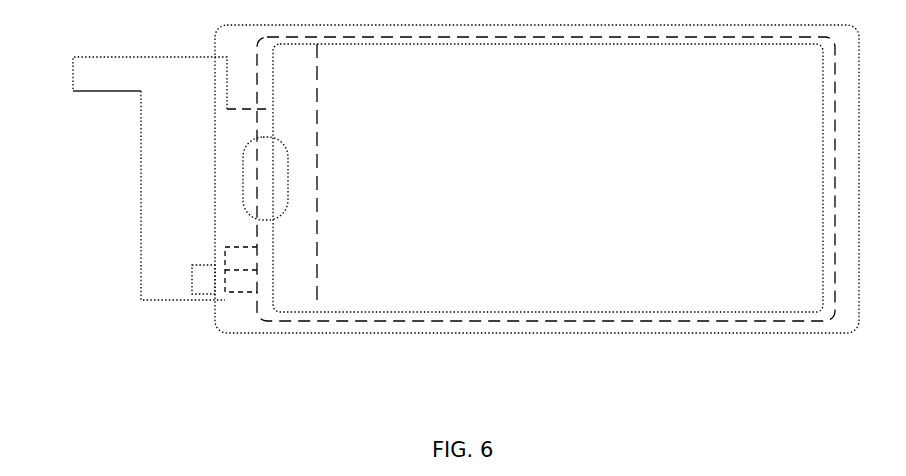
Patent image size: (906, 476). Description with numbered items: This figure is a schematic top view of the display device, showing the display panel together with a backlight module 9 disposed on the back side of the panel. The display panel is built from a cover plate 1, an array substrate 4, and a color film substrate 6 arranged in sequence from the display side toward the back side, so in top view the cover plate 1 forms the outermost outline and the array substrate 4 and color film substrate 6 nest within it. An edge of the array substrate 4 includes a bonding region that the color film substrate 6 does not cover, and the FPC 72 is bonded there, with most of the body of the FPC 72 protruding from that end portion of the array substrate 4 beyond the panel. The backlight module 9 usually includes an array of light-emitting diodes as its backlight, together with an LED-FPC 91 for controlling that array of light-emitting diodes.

The cover plate 1 is at (583, 323).
The array substrate 4 is at (293, 298).
The color film substrate 6 is at (378, 295).
The backlight module 9 is at (264, 305).
The LED-FPC 91 is at (205, 280).
The FPC 72 is at (175, 238).